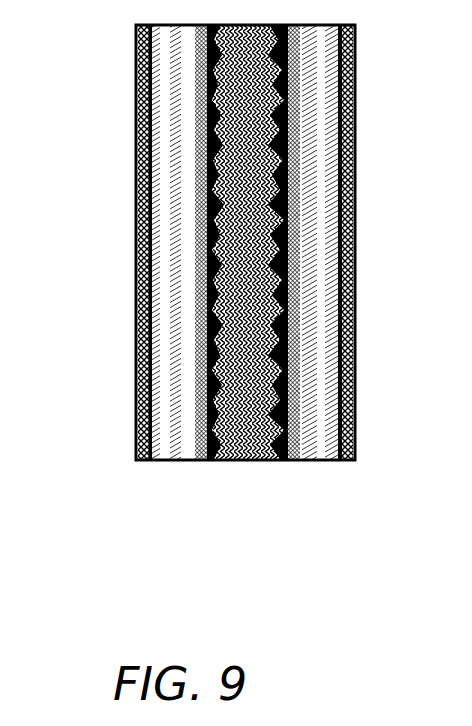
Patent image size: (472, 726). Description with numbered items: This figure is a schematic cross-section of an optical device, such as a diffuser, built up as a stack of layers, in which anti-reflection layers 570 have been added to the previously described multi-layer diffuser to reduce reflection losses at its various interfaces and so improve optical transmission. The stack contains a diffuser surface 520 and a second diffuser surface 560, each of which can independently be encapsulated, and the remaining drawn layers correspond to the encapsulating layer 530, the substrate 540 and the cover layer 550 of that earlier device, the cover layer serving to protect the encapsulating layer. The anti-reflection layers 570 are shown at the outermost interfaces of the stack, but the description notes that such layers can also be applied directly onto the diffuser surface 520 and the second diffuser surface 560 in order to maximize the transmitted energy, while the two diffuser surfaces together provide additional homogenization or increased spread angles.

The anti-reflection layer 570 is at (137, 400).
The inner porous layer 550 is at (175, 445).
The second diffuser surface 560 is at (200, 460).
The central core layer 530 is at (238, 460).
The diffuser surface 520 is at (283, 460).
The outer porous layer 540 is at (320, 443).